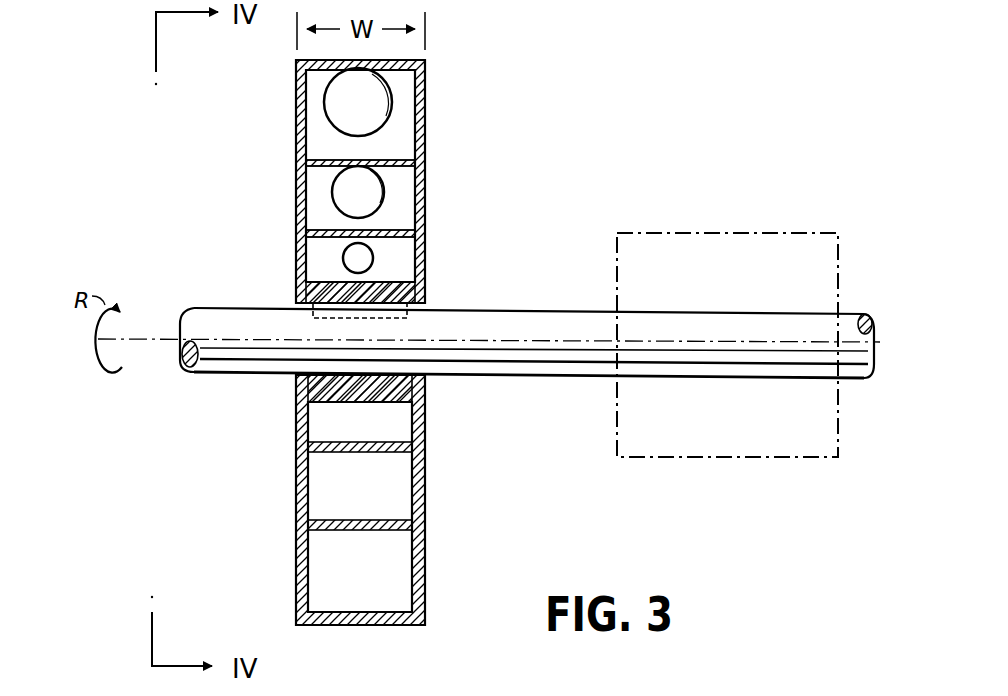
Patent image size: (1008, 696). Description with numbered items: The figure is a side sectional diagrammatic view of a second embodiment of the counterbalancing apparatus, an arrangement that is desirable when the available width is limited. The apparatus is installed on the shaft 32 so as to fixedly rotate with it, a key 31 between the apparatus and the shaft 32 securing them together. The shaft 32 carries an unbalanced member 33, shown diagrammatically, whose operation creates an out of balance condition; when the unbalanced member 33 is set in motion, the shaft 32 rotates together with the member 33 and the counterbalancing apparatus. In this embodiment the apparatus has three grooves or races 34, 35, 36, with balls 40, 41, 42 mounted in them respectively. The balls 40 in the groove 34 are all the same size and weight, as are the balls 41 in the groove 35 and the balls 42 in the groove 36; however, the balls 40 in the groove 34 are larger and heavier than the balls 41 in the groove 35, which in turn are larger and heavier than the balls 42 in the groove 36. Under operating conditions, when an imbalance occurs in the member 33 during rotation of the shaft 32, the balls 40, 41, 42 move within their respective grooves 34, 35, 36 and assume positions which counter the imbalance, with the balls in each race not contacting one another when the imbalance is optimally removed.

The key 31 is at (392, 302).
The shaft 32 is at (540, 311).
The unbalanced member 33 is at (695, 232).
The groove 34 is at (388, 152).
The groove 35 is at (390, 230).
The groove 36 is at (388, 282).
The balls 40 is at (340, 99).
The balls 41 is at (342, 190).
The balls 42 is at (352, 257).